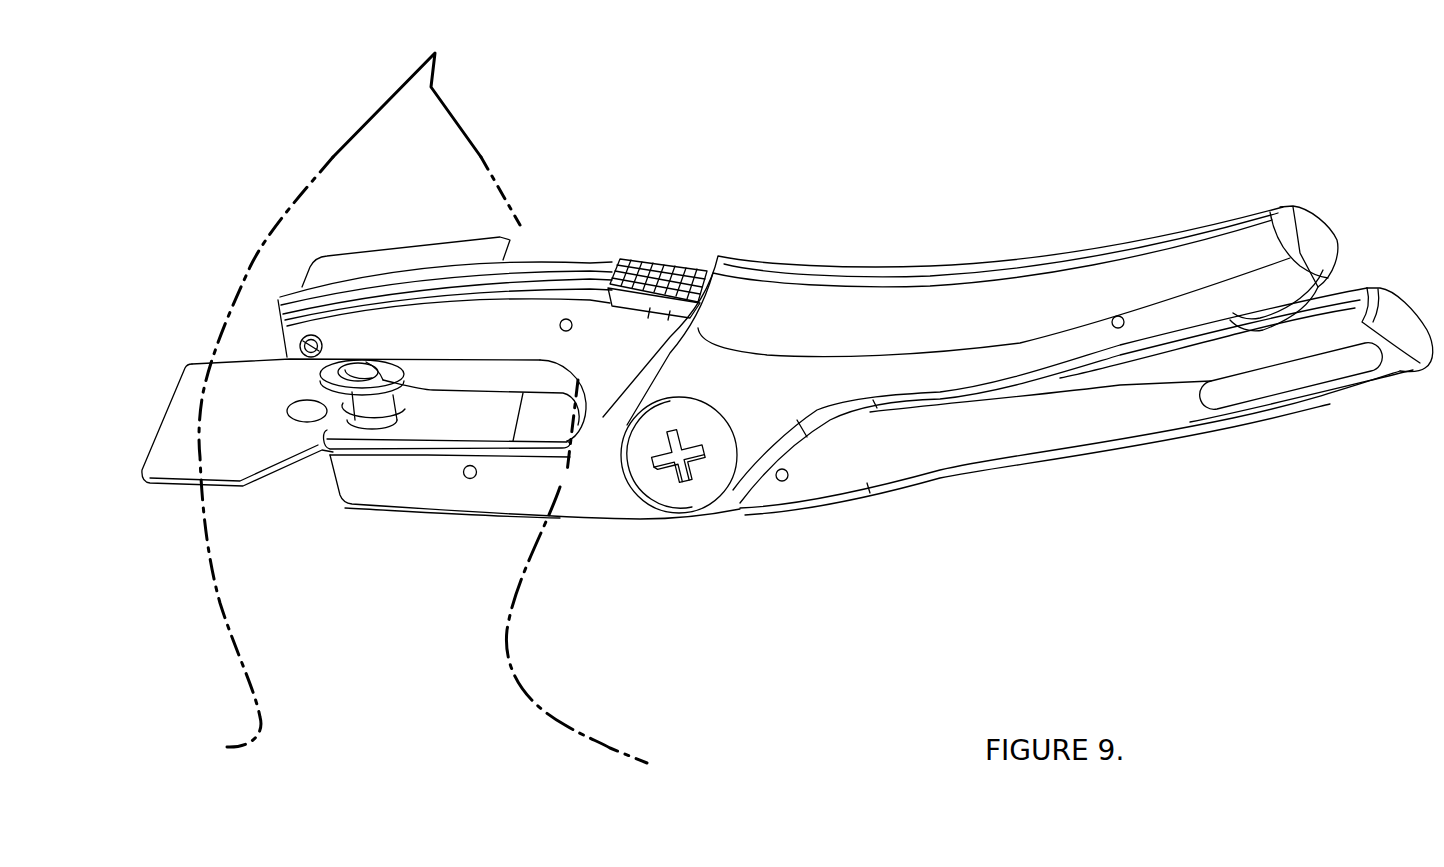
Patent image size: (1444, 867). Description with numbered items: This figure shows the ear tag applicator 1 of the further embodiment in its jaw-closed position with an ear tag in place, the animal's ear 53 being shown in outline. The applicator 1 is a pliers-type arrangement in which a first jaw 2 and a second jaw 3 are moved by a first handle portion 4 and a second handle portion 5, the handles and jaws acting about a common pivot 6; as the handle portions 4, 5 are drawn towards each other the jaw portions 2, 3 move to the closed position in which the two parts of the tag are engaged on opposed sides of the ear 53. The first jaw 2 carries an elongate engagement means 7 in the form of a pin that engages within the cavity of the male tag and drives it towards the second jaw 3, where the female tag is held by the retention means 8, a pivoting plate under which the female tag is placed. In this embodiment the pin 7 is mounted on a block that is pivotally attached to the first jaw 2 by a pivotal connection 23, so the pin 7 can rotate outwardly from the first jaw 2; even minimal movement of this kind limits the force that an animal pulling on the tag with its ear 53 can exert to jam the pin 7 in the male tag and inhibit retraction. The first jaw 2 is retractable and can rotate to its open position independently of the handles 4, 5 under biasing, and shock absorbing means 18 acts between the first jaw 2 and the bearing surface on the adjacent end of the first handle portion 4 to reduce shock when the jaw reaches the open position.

The applicator 1 is at (870, 192).
The first jaw 2 is at (478, 322).
The second jaw 3 is at (478, 475).
The first handle portion 4 is at (1015, 307).
The second handle portion 5 is at (1068, 430).
The common pivot 6 is at (719, 470).
The elongate engagement means 7 is at (366, 372).
The retention means 8 is at (446, 410).
The shock absorbing means 18 is at (660, 257).
The pivotal connection 23 is at (307, 340).
The ear 53 is at (298, 620).